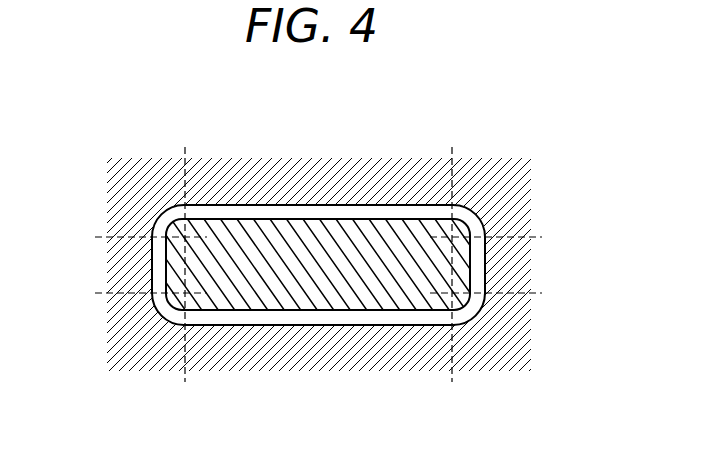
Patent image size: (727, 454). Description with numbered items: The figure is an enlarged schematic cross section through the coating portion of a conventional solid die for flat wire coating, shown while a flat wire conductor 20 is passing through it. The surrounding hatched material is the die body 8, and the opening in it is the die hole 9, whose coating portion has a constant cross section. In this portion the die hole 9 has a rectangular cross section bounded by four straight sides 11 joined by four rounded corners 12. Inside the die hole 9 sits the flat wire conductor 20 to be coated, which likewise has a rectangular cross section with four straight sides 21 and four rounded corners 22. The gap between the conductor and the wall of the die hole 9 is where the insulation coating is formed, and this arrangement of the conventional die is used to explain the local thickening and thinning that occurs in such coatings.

The die body 8 is at (387, 353).
The die hole 9 is at (328, 318).
The straight side 11 is at (152, 265).
The rounded corner 12 is at (163, 210).
The flat wire conductor 20 is at (258, 297).
The straight side 21 is at (470, 265).
The rounded corner 22 is at (168, 318).